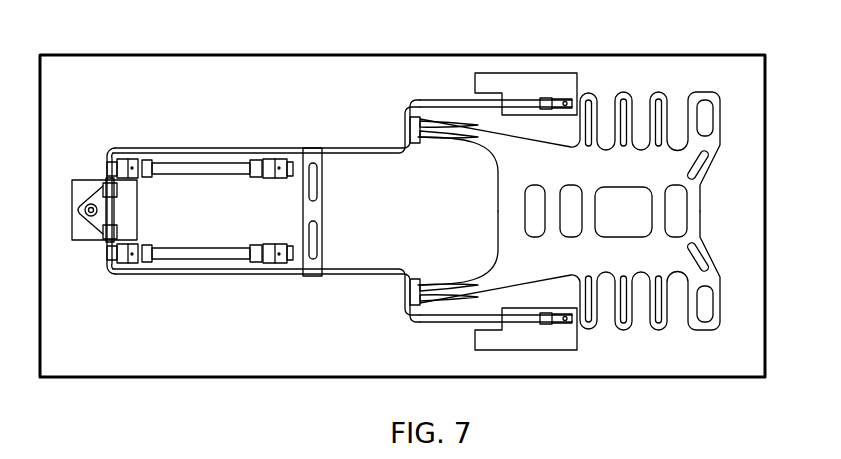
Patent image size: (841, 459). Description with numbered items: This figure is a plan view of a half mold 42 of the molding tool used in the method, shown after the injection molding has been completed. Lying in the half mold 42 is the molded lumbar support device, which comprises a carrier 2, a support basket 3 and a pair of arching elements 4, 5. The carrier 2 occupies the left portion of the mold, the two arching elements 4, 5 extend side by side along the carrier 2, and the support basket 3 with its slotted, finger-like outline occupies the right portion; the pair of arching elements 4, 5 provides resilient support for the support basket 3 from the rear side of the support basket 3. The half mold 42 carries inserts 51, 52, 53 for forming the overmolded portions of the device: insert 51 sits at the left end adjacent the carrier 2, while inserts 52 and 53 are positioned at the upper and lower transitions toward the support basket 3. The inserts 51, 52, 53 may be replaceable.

The carrier 2 is at (260, 148).
The support basket 3 is at (722, 103).
The arching element 4 is at (204, 160).
The arching element 5 is at (205, 262).
The half mold 42 is at (140, 55).
The insert 51 is at (100, 181).
The insert 52 is at (578, 94).
The insert 53 is at (578, 330).